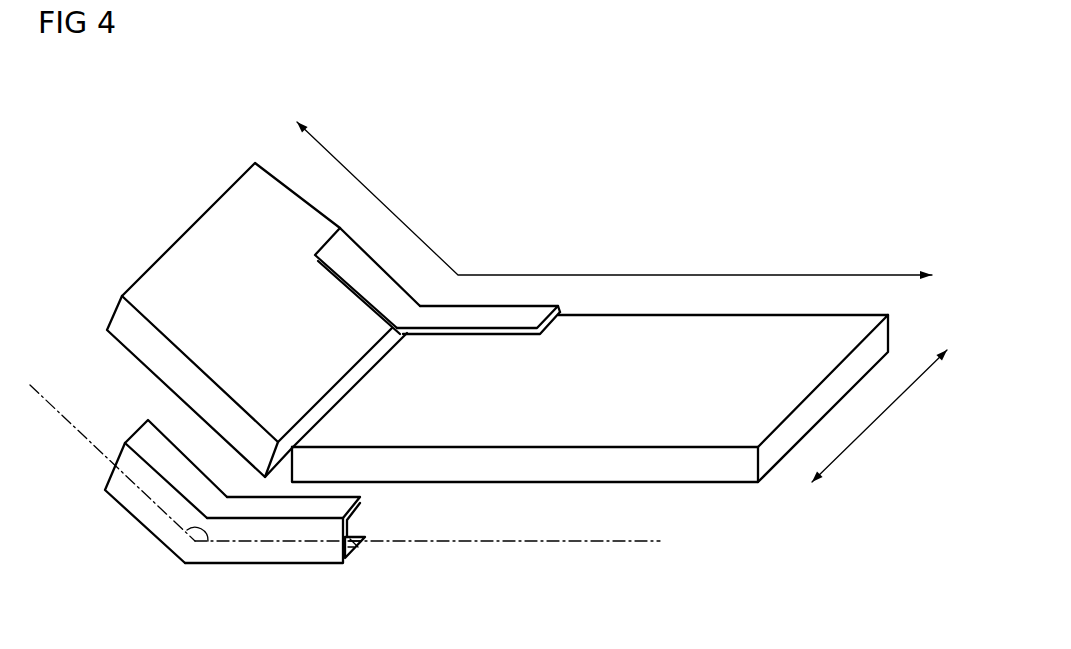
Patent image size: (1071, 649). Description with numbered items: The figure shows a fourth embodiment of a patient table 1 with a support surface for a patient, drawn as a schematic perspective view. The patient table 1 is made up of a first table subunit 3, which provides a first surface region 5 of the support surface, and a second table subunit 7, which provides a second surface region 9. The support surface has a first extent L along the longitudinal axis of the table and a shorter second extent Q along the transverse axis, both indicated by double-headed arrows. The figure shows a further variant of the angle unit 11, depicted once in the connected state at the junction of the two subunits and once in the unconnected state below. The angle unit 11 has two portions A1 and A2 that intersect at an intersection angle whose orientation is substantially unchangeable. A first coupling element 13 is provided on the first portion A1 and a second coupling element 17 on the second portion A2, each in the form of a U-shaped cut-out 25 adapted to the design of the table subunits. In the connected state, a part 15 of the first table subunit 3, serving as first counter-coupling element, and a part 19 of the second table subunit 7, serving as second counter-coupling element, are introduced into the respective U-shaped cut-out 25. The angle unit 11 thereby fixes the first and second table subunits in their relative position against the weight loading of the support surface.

The patient table 1 is at (677, 155).
The first table subunit 3 is at (709, 483).
The first surface region 5 is at (612, 427).
The second table subunit 7 is at (203, 212).
The second surface region 9 is at (193, 248).
The angle unit 11 is at (517, 306).
The first coupling element 13 is at (362, 517).
The first counter-coupling element 15 is at (387, 473).
The second coupling element 17 is at (133, 424).
The second counter-coupling element 19 is at (203, 401).
The U-shaped cut-out 25 is at (358, 547).
The first extent L is at (593, 275).
The second extent Q is at (882, 413).
The first portion A1 is at (247, 577).
The second portion A2 is at (160, 548).